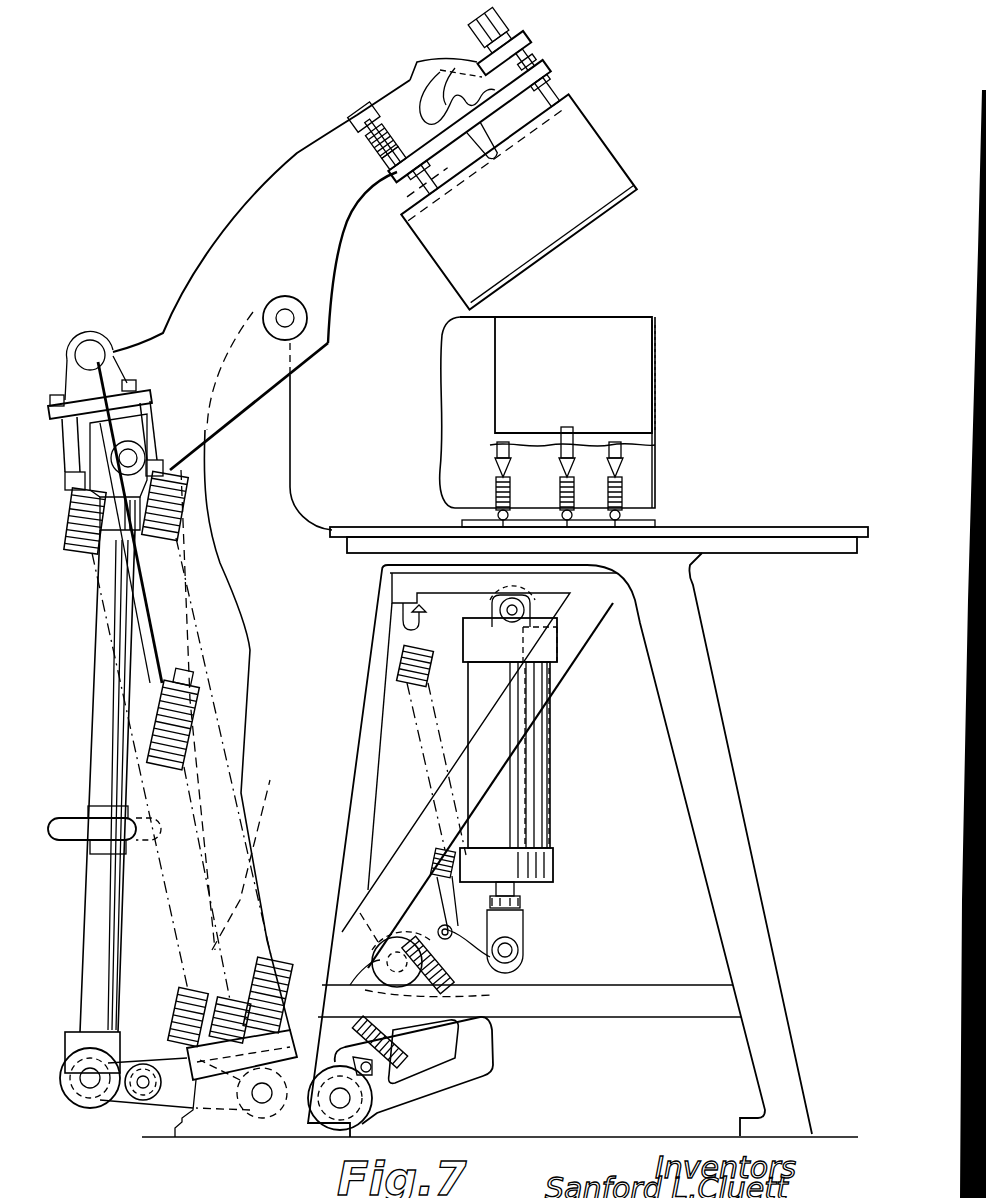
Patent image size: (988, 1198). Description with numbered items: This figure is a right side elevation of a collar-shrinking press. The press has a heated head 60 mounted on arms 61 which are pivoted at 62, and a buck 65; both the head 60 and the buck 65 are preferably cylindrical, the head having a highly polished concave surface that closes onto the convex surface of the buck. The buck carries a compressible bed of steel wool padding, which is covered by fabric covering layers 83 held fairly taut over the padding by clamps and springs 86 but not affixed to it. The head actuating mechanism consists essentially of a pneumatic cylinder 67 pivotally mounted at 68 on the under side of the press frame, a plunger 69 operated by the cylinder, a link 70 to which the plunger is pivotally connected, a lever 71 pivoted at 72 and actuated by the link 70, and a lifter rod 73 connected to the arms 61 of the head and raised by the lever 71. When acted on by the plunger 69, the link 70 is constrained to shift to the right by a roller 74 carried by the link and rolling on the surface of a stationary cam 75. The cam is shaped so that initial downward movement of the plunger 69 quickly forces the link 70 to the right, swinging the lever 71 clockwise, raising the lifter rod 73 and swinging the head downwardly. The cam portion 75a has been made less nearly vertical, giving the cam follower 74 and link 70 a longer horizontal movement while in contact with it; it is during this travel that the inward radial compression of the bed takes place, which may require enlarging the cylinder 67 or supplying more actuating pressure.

The heated head 60 is at (602, 226).
The arms 61 is at (231, 228).
The pivot 62 is at (303, 325).
The buck 65 is at (661, 375).
The pneumatic cylinder 67 is at (538, 778).
The pivot mounting 68 is at (519, 598).
The plunger 69 is at (520, 903).
The link 70 is at (168, 1040).
The lever 71 is at (167, 1097).
The lever pivot 72 is at (262, 1094).
The lifter rod 73 is at (100, 773).
The roller 74 is at (365, 915).
The stationary cam 75 is at (497, 1031).
The inclined cam portion 75a is at (497, 1052).
The fabric covering layers 83 is at (633, 321).
The springs 86 is at (497, 490).